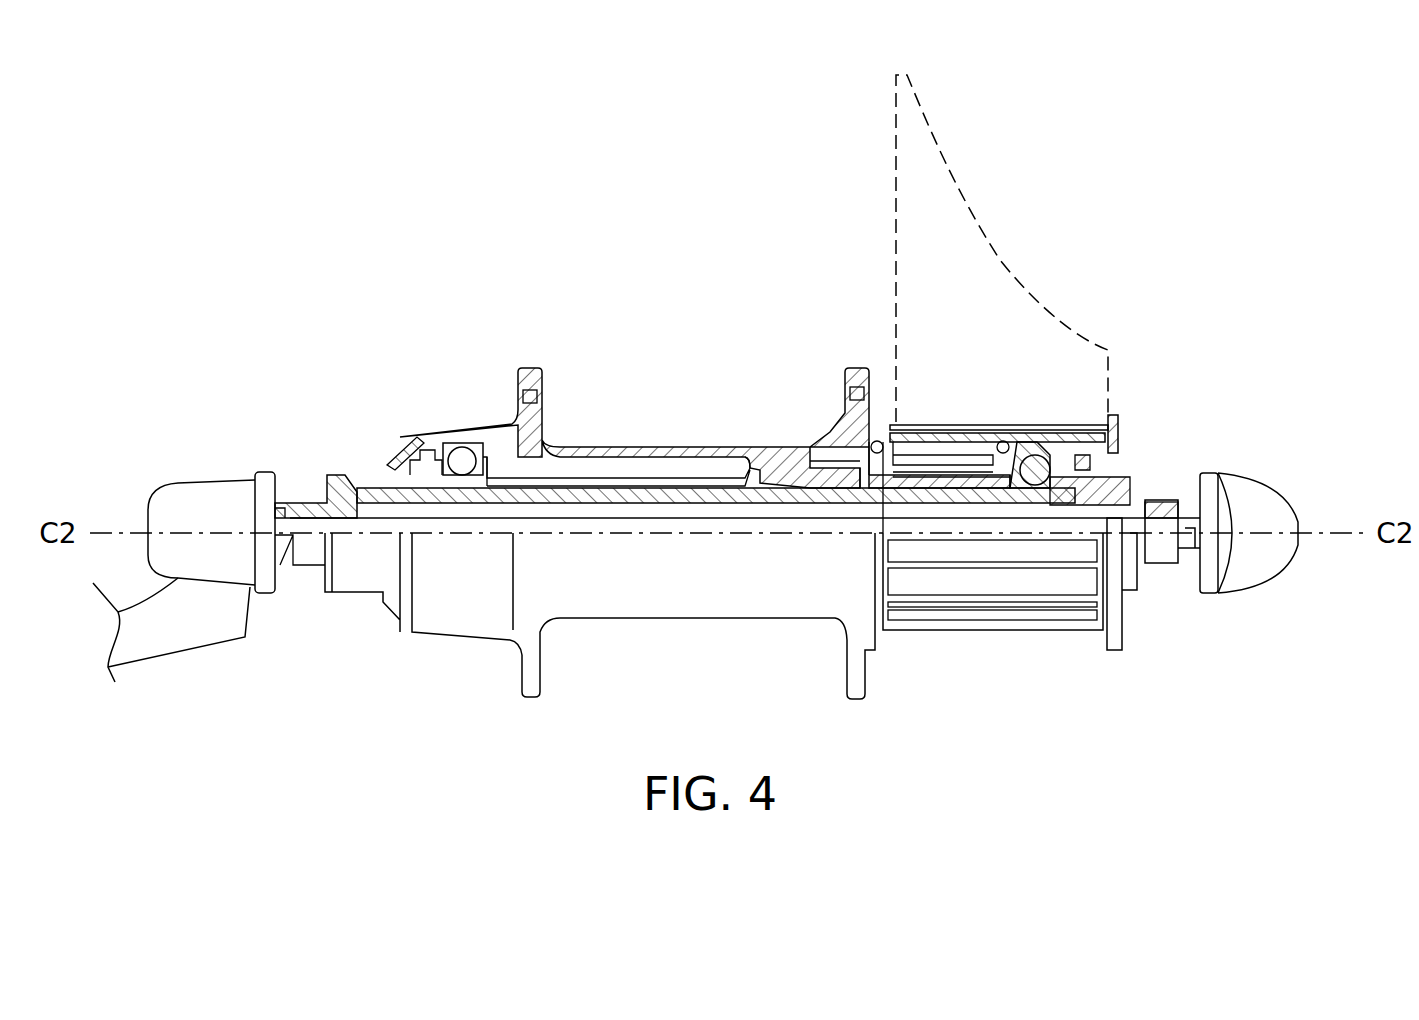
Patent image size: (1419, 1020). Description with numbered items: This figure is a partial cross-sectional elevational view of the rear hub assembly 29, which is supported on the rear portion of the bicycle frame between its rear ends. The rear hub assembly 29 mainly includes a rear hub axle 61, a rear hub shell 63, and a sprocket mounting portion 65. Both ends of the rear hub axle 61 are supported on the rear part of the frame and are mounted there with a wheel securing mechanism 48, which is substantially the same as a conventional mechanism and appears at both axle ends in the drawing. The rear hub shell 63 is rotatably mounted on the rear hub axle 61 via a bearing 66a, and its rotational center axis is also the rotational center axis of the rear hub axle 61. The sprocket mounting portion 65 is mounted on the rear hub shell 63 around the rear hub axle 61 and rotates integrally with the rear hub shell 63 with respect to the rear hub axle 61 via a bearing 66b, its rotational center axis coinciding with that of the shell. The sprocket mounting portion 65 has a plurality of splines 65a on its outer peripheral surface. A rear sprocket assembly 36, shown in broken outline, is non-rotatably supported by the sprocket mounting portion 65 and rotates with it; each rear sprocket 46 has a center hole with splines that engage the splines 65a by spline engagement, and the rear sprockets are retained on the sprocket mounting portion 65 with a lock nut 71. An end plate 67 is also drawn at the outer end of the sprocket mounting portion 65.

The rear hub assembly 29 is at (458, 292).
The rear sprocket assembly 36 is at (1038, 245).
The rear sprocket 46 is at (996, 226).
The wheel securing mechanism 48 is at (192, 692).
The rear hub axle 61 is at (648, 503).
The rear hub shell 63 is at (636, 452).
The sprocket mounting portion 65 is at (930, 655).
The splines 65a is at (928, 426).
The bearing 66a is at (462, 482).
The bearing 66b is at (1022, 492).
The end plate 67 is at (1100, 658).
The lock nut 71 is at (1114, 430).